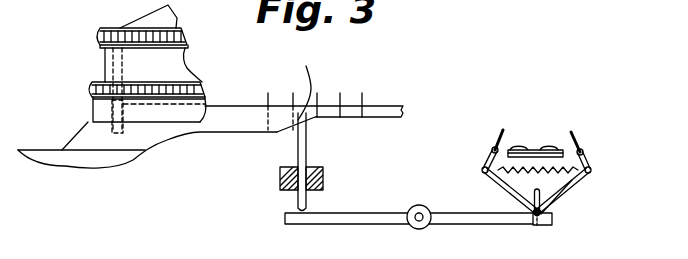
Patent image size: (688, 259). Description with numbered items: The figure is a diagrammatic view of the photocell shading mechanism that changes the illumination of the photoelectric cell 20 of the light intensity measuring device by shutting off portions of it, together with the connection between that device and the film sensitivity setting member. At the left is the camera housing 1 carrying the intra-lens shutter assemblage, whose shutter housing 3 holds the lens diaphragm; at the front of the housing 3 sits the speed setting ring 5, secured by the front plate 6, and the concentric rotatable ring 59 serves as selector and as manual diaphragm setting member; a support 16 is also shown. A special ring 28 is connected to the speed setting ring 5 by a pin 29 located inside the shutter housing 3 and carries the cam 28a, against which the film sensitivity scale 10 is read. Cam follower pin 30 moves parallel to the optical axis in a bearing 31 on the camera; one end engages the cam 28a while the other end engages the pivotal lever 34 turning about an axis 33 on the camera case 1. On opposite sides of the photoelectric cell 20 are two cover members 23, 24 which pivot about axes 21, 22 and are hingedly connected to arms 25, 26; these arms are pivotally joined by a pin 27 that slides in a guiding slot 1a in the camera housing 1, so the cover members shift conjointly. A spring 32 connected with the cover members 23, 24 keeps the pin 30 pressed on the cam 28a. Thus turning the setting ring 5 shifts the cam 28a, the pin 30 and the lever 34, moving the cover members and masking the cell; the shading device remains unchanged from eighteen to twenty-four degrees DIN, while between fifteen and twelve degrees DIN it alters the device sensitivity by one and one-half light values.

The camera housing 1 is at (75, 160).
The guiding slot 1a is at (538, 226).
The shutter housing 3 is at (105, 50).
The speed setting ring 5 is at (97, 35).
The front plate 6 is at (148, 18).
The film speed scale 10 is at (328, 80).
The support 16 is at (80, 135).
The photoelectric cell 20 is at (533, 147).
The axis 21 is at (590, 157).
The axis 22 is at (487, 158).
The cover member 23 is at (578, 143).
The cover member 24 is at (497, 133).
The arm 25 is at (565, 197).
The arm 26 is at (503, 186).
The pin 27 is at (542, 215).
The special ring 28 is at (226, 106).
The cam 28a is at (288, 84).
The pin 29 is at (100, 64).
The cam follower pin 30 is at (307, 143).
The bearing 31 is at (323, 178).
The spring 32 is at (573, 180).
The axis 33 is at (410, 225).
The pivotal lever 34 is at (483, 226).
The rotatable ring 59 is at (87, 91).